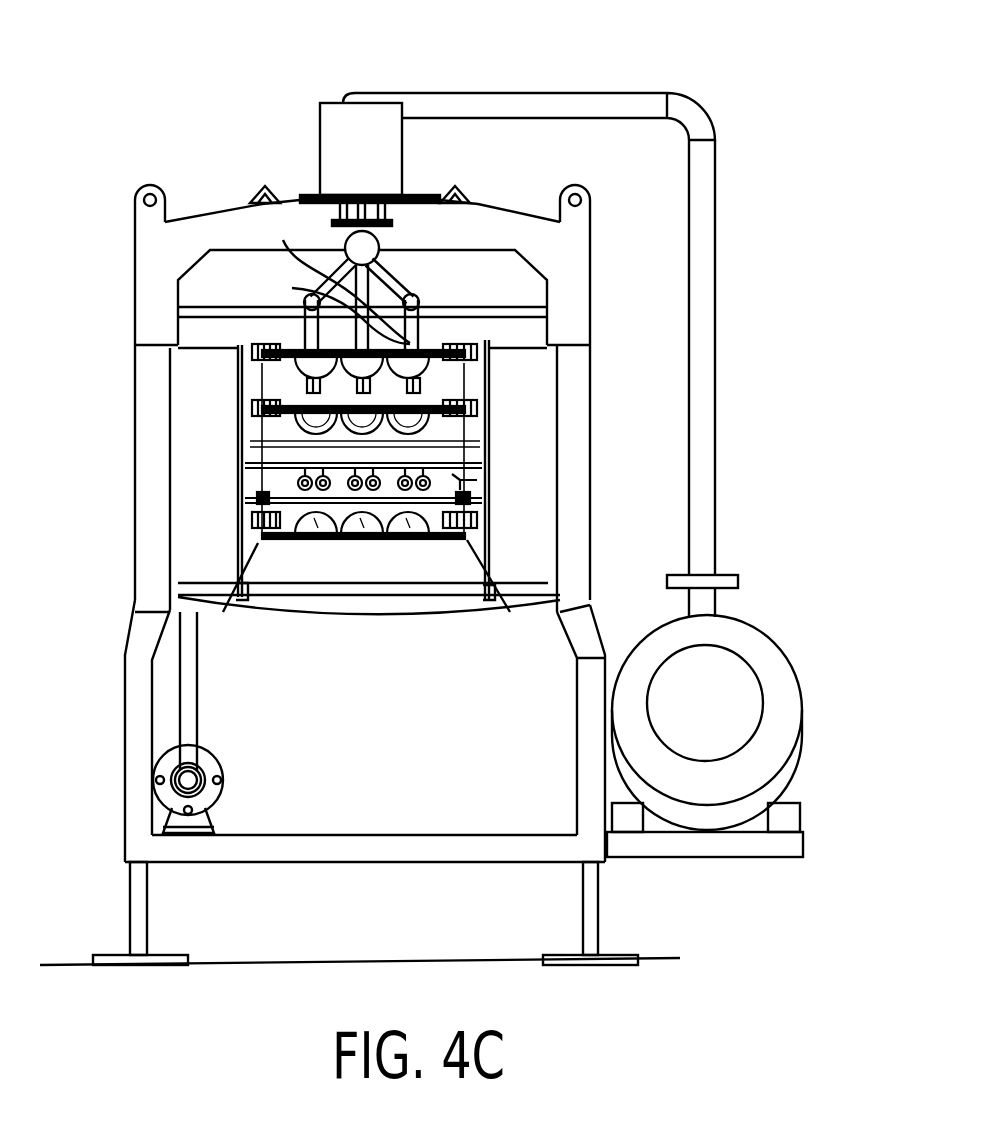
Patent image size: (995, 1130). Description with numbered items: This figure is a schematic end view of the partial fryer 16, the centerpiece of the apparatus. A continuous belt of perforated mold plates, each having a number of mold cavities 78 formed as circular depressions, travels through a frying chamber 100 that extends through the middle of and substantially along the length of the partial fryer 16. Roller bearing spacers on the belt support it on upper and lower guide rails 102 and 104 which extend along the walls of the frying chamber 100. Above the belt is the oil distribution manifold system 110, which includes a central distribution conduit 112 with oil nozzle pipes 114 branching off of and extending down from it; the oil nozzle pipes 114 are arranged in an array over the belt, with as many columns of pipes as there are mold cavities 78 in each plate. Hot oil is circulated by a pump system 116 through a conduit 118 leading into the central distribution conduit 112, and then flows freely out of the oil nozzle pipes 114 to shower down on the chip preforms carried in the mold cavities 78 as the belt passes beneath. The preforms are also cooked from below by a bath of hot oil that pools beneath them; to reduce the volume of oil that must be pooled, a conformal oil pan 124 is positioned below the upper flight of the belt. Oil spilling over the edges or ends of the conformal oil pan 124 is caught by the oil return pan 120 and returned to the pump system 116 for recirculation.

The partial fryer 16 is at (134, 94).
The mold cavities 78 is at (428, 395).
The frying chamber 100 is at (388, 579).
The upper guide rails 102 is at (243, 428).
The lower guide rails 104 is at (237, 590).
The oil distribution manifold system 110 is at (442, 273).
The central distribution conduit 112 is at (368, 255).
The oil nozzle pipes 114 is at (325, 273).
The pump system 116 is at (733, 718).
The conduit 118 is at (550, 107).
The oil return pan 120 is at (242, 468).
The conformal oil pan 124 is at (483, 445).